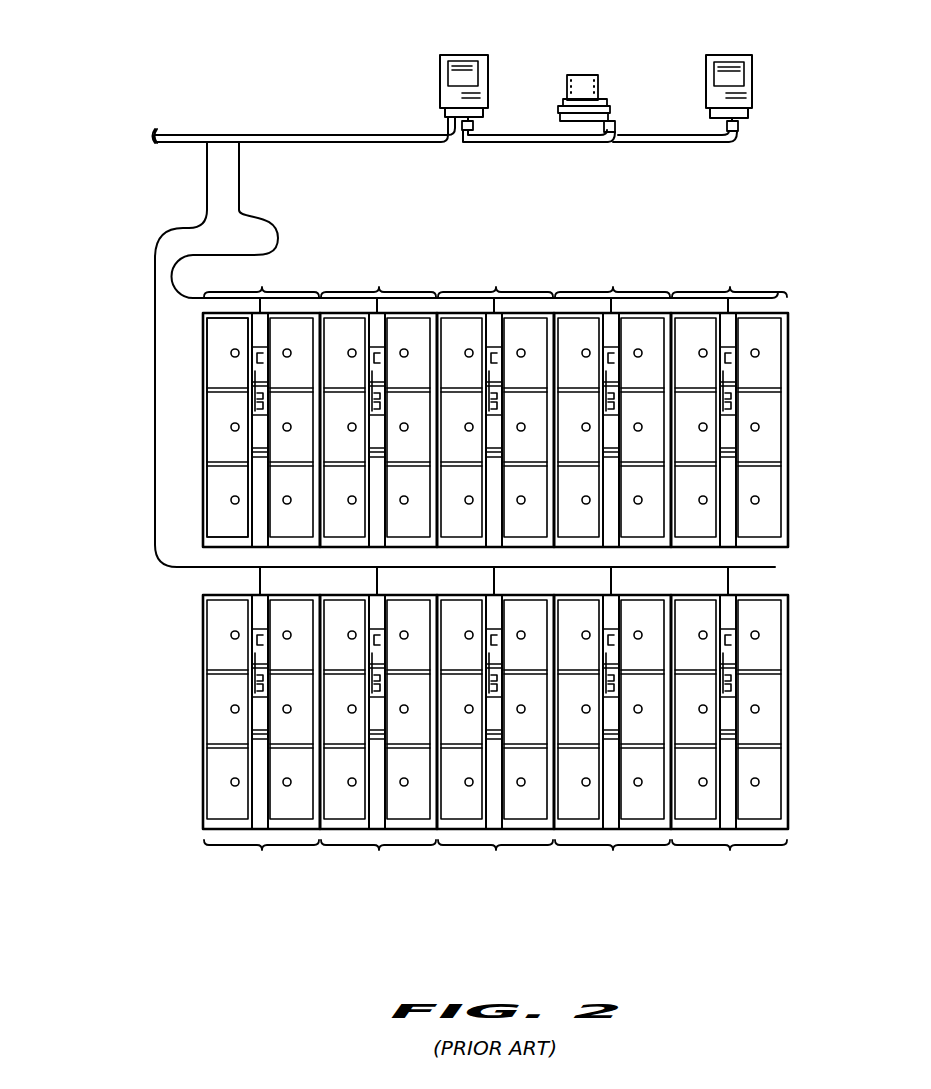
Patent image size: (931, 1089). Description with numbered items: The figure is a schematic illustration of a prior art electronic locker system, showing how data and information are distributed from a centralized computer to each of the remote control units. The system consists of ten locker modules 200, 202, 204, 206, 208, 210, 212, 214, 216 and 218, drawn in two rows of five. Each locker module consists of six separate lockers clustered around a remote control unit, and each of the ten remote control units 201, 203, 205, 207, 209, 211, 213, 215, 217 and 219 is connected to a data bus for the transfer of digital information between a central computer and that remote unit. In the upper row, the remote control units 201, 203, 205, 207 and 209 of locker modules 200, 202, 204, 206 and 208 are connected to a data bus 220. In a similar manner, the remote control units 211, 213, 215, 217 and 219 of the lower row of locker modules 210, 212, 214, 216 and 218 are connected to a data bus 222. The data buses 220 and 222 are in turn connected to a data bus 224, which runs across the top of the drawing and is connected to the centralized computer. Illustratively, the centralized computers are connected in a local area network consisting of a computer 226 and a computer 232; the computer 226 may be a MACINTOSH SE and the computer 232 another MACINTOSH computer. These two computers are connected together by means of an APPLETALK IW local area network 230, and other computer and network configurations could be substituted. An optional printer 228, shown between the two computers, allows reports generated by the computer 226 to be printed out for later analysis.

The locker module 200 is at (261, 405).
The remote control unit 201 is at (252, 355).
The locker module 202 is at (378, 405).
The remote control unit 203 is at (378, 340).
The locker module 204 is at (495, 405).
The remote control unit 205 is at (495, 340).
The locker module 206 is at (612, 405).
The remote control unit 207 is at (612, 340).
The locker module 208 is at (729, 405).
The remote control unit 209 is at (729, 340).
The locker module 210 is at (261, 737).
The remote control unit 211 is at (261, 808).
The locker module 212 is at (378, 737).
The remote control unit 213 is at (378, 808).
The locker module 214 is at (495, 738).
The remote control unit 215 is at (495, 808).
The locker module 216 is at (612, 738).
The remote control unit 217 is at (612, 808).
The locker module 218 is at (729, 738).
The remote control unit 219 is at (729, 808).
The data bus 220 is at (263, 213).
The data bus 222 is at (185, 226).
The data bus 224 is at (290, 133).
The computer 226 is at (460, 55).
The printer 228 is at (566, 95).
The local area network 230 is at (648, 135).
The computer 232 is at (752, 72).